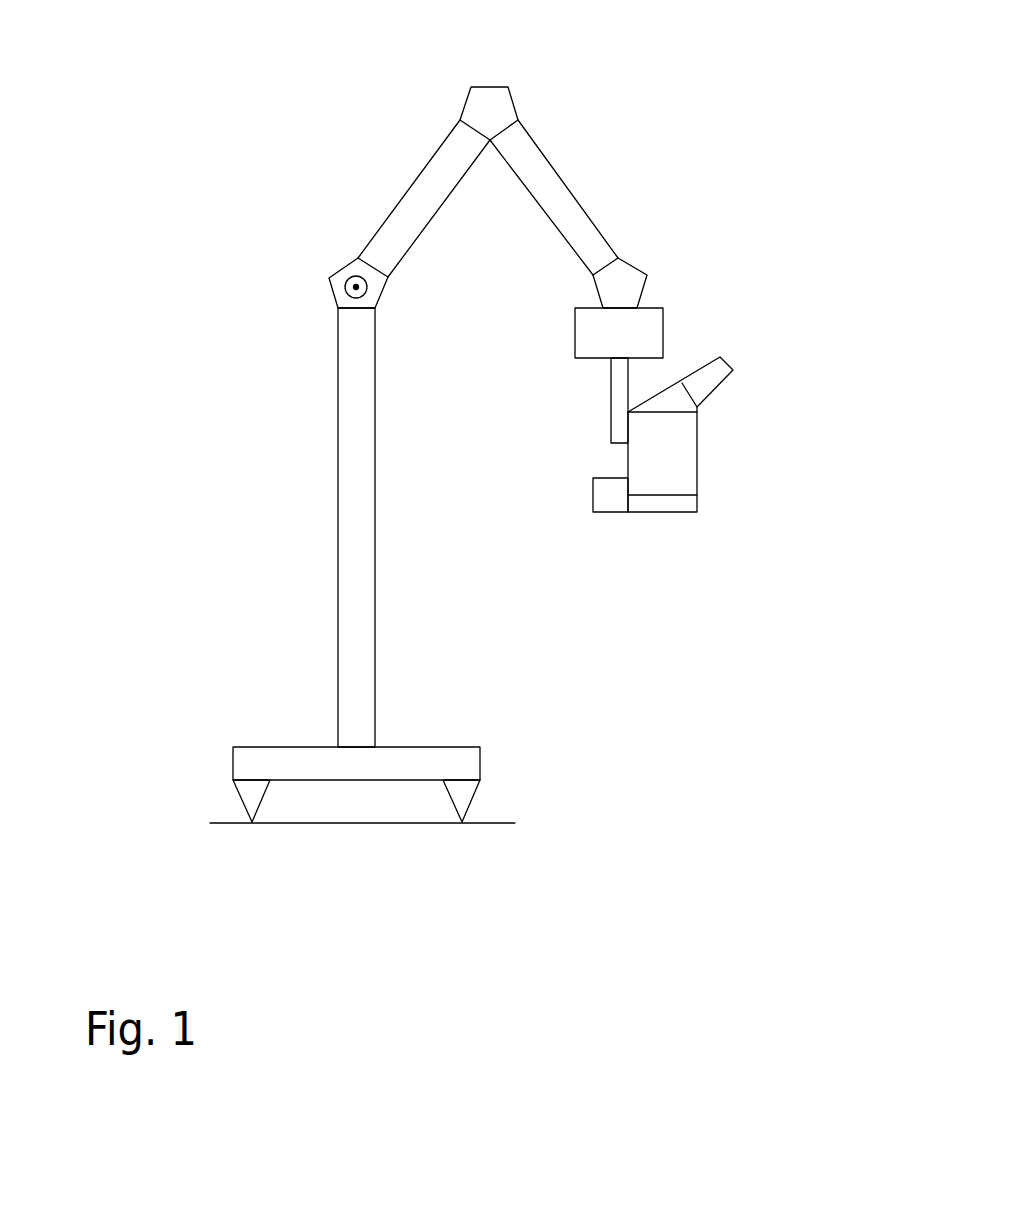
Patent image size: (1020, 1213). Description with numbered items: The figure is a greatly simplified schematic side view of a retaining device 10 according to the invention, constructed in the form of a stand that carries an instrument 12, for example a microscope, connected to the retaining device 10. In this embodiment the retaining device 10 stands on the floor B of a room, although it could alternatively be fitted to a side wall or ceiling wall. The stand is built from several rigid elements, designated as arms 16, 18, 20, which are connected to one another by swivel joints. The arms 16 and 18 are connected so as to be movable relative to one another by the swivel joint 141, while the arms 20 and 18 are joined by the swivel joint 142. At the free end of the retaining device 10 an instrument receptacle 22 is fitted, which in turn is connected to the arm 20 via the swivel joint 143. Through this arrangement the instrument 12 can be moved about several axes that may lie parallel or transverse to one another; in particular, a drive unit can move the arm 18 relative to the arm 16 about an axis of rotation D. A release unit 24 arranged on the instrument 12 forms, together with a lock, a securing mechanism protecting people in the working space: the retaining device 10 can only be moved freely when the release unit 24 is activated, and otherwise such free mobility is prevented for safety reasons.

The retaining device 10 is at (722, 103).
The instrument 12 is at (703, 460).
The swivel joint 141 is at (330, 277).
The swivel joint 142 is at (487, 113).
The swivel joint 143 is at (627, 283).
The arm 16 is at (338, 523).
The arm 18 is at (408, 185).
The arm 20 is at (557, 197).
The instrument receptacle 22 is at (610, 398).
The release unit 24 is at (594, 497).
The axis of rotation D is at (355, 287).
The floor B is at (497, 827).